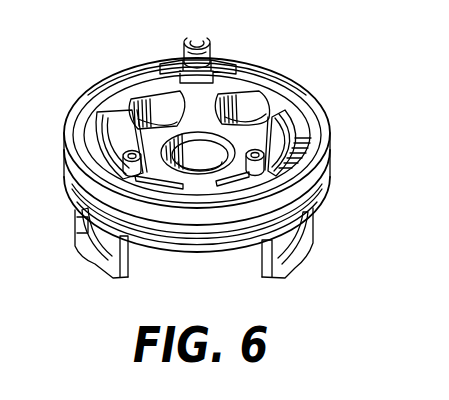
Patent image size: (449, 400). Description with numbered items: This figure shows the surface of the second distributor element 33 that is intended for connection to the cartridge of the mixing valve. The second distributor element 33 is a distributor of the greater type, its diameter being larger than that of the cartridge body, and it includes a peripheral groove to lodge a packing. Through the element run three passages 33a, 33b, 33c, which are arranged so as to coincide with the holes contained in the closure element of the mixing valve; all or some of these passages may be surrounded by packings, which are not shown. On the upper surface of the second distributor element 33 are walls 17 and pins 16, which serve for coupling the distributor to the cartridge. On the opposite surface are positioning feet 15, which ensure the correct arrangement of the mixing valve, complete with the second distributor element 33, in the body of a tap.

The positioning feet 15 is at (95, 265).
The pins 16 is at (201, 36).
The walls 17 is at (96, 133).
The second distributor element 33 is at (327, 132).
The passage 33a is at (136, 112).
The passage 33b is at (266, 108).
The passage 33c is at (186, 162).